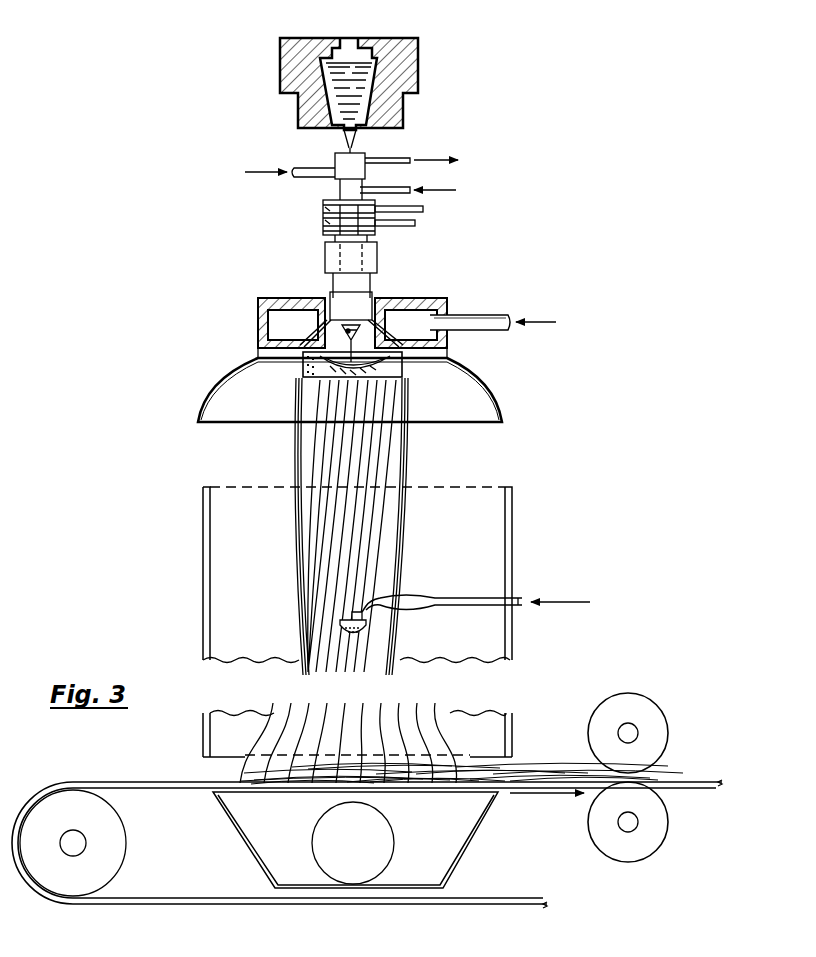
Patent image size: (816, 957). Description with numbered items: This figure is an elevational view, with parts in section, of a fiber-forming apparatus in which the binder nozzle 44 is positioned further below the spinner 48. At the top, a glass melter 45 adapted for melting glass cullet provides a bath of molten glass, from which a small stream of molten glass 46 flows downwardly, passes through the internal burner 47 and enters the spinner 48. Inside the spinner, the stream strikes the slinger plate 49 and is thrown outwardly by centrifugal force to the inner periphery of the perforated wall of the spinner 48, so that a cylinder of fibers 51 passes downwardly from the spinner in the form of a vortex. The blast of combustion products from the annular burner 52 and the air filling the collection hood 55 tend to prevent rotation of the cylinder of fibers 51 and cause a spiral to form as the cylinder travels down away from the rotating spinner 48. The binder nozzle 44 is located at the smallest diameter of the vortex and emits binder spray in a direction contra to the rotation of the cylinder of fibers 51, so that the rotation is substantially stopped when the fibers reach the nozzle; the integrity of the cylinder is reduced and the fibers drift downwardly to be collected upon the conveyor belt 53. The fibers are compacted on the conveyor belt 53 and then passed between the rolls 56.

The binder nozzle 44 is at (343, 632).
The glass melter 45 is at (300, 66).
The stream of molten glass 46 is at (353, 149).
The internal burner 47 is at (348, 320).
The spinner 48 is at (390, 328).
The slinger plate 49 is at (372, 379).
The cylinder of fibers 51 is at (405, 452).
The annular burner 52 is at (446, 312).
The conveyor belt 53 is at (158, 782).
The collection hood 55 is at (512, 488).
The rolls 56 is at (657, 705).